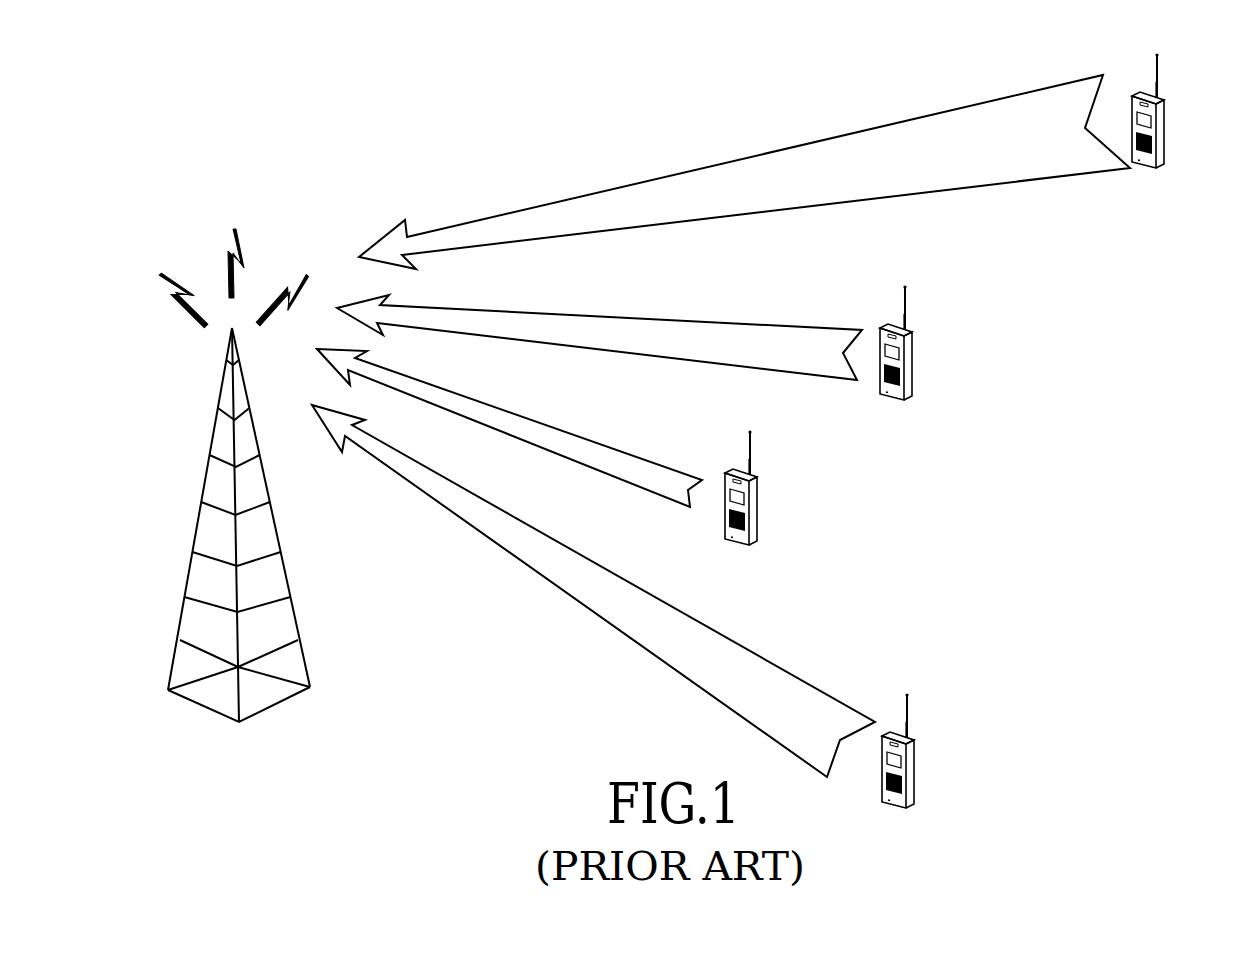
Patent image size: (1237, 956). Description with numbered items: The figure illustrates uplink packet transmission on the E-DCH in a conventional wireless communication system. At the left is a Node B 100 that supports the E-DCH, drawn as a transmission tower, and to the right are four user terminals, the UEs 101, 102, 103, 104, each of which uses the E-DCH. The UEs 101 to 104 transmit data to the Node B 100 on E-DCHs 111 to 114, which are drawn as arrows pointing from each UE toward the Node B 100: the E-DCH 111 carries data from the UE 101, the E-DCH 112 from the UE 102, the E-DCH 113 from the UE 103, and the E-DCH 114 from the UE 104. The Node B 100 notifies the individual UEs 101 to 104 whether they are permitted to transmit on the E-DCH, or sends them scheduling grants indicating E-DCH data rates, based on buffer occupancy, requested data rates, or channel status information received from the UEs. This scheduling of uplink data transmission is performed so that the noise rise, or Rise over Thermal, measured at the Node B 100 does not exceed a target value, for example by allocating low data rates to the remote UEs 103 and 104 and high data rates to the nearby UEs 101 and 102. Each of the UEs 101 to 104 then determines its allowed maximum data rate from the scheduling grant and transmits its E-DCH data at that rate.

The Node B 100 is at (277, 527).
The UE 101 is at (758, 510).
The UE 102 is at (913, 365).
The UE 103 is at (918, 777).
The UE 104 is at (1163, 133).
The E-DCH 111 is at (557, 430).
The E-DCH 112 is at (620, 320).
The E-DCH 113 is at (613, 572).
The E-DCH 114 is at (747, 155).